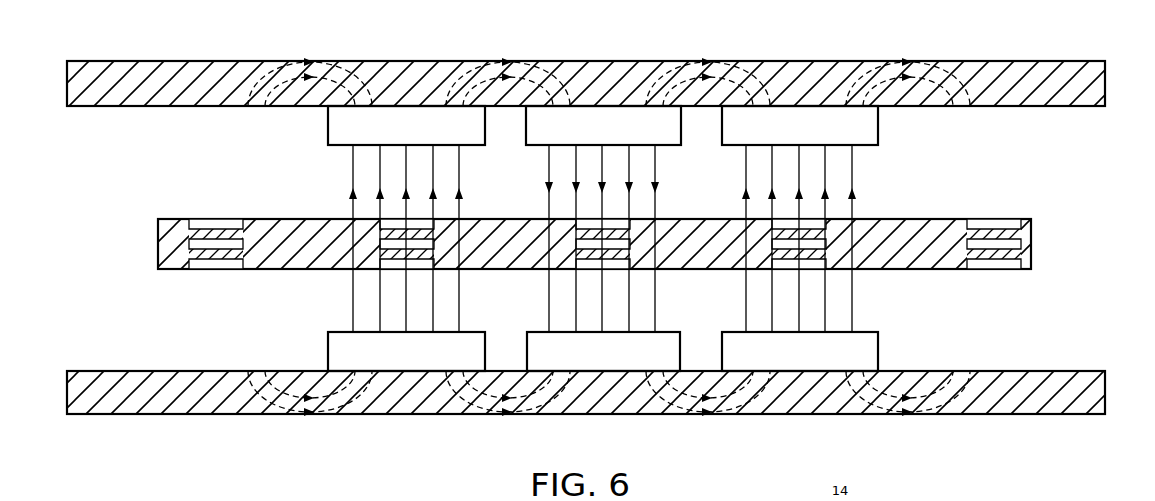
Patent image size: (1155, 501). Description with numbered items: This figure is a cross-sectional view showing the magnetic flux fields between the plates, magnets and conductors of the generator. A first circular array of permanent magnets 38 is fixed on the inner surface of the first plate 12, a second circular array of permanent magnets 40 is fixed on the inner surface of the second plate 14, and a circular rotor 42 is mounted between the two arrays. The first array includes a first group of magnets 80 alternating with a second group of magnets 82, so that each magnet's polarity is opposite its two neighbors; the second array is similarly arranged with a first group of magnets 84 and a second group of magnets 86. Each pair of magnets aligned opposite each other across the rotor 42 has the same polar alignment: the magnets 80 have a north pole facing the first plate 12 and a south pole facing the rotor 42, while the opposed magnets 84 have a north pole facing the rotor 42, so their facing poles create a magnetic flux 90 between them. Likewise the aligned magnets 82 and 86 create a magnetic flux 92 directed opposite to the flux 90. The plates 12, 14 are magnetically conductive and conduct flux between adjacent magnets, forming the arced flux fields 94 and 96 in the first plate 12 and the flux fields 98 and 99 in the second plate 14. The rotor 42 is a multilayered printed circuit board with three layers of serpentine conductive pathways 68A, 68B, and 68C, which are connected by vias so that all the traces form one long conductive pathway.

The first plate 12 is at (1096, 80).
The second plate 14 is at (998, 404).
The first circular array of permanent magnets 38 is at (243, 113).
The second circular array of permanent magnets 40 is at (243, 328).
The rotor 42 is at (595, 258).
The first layer of conductive pathways 68A is at (1022, 222).
The second layer of conductive pathways 68B is at (1022, 244).
The third layer of conductive pathways 68C is at (1022, 265).
The first group of magnets 80 is at (340, 129).
The second group of magnets 82 is at (538, 129).
The first group of magnets of second array 84 is at (340, 353).
The second group of magnets of second array 86 is at (540, 353).
The magnetic flux 90 is at (447, 166).
The magnetic flux 92 is at (648, 166).
The arced flux field 94 is at (336, 70).
The arced flux field 96 is at (545, 70).
The flux field 98 is at (347, 414).
The flux field 99 is at (540, 414).